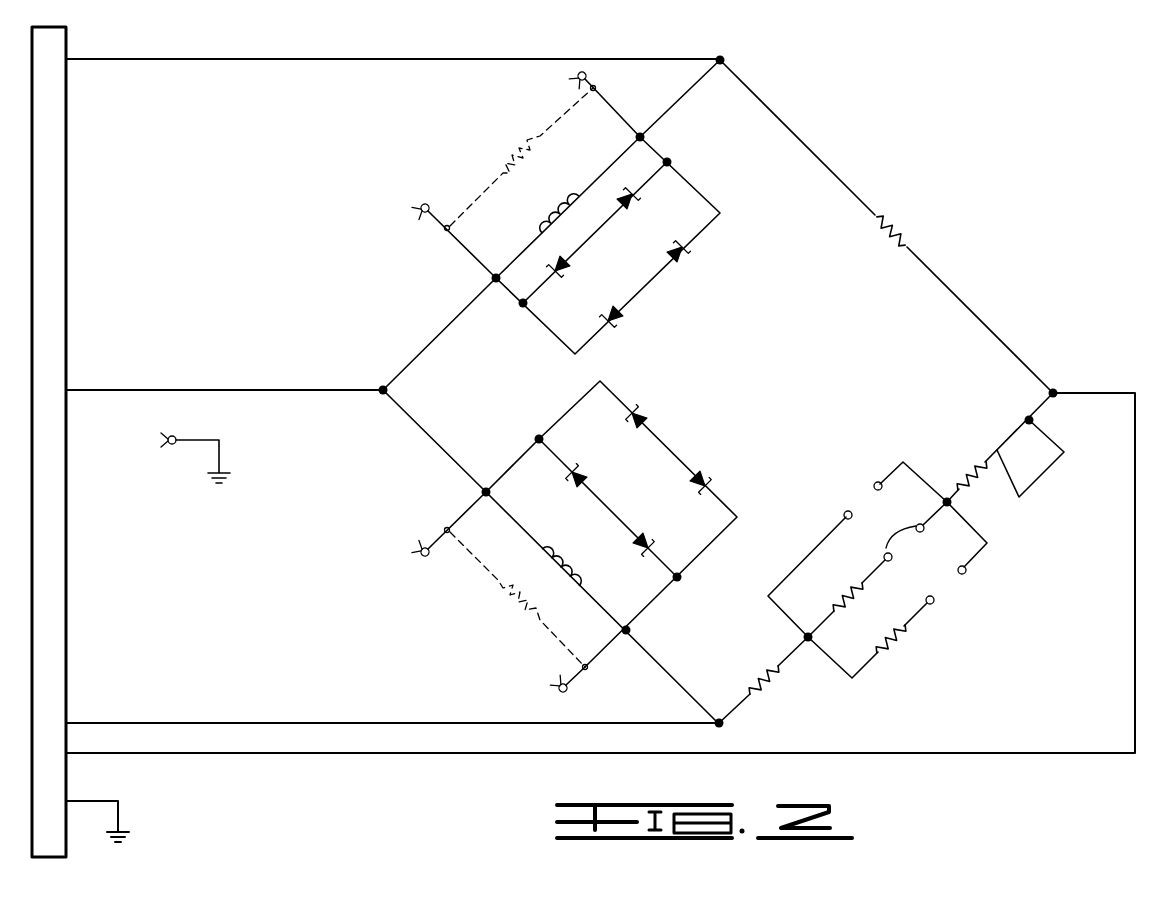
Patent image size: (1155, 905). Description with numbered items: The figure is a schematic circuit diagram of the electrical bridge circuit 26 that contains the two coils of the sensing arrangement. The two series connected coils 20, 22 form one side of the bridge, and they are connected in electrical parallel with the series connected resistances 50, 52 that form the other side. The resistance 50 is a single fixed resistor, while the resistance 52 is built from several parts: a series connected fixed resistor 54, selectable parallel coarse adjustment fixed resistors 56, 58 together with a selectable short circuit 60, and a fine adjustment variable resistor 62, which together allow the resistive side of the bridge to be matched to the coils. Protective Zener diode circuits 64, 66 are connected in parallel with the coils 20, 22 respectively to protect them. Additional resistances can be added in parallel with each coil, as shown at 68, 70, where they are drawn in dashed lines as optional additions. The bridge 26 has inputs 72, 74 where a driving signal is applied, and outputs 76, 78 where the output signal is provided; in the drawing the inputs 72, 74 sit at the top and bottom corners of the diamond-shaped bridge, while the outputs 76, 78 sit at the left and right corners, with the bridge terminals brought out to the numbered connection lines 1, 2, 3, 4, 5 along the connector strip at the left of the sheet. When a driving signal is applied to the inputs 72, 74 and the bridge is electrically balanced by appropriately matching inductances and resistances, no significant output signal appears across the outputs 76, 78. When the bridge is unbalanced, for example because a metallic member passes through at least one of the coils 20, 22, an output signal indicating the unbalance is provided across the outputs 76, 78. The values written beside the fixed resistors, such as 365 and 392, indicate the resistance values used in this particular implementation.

The bus line 1 is at (393, 46).
The bus line 2 is at (392, 710).
The bus line 3 is at (224, 378).
The bus line 4 is at (600, 573).
The bus line 5 (ground) 5 is at (97, 809).
The coil 20 is at (551, 203).
The coil 22 is at (566, 548).
The bridge circuit 26 is at (905, 114).
The resistance 50 is at (893, 212).
The resistance 52 is at (920, 440).
The fixed resistor 54 is at (786, 682).
The coarse adjustment fixed resistor 56 is at (898, 641).
The coarse adjustment fixed resistor 58 is at (855, 607).
The short circuit 60 is at (805, 556).
The fine adjustment variable resistor 62 is at (997, 470).
The Zener diode circuit 64 is at (737, 198).
The Zener diode circuit 66 is at (690, 430).
The resistance 68 is at (514, 156).
The resistance 70 is at (500, 603).
The input 72 is at (724, 58).
The input 74 is at (724, 725).
The output 76 is at (383, 388).
The output 78 is at (1056, 391).
The resistance value 365 is at (761, 671).
The resistance value 392 is at (911, 229).